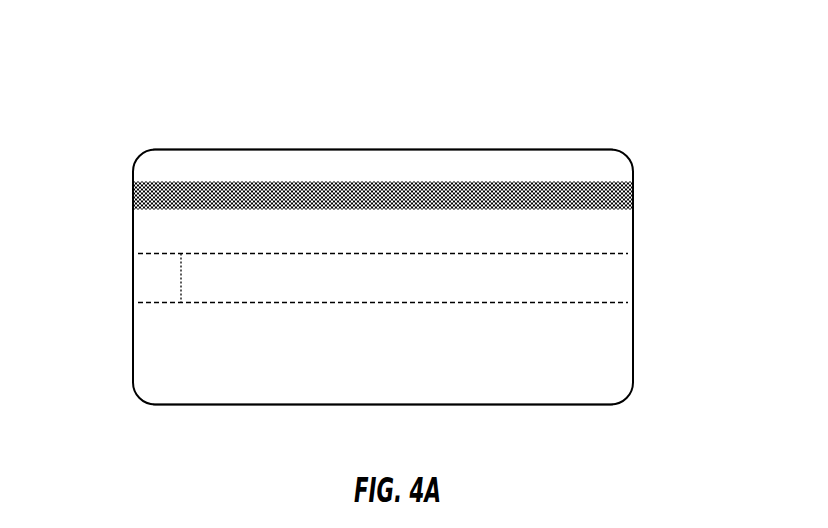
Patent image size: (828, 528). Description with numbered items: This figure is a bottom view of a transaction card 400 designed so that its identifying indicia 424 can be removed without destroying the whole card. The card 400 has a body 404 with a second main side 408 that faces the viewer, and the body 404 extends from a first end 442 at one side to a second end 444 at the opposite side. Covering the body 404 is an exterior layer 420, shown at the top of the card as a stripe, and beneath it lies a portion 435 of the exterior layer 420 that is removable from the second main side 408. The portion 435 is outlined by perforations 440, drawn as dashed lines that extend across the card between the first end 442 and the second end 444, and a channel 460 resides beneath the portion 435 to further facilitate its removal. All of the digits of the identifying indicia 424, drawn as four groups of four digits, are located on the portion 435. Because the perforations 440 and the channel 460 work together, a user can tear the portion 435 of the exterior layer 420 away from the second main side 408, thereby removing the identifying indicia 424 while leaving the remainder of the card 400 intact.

The card 400 is at (238, 88).
The body 404 is at (473, 134).
The second main side 408 is at (545, 390).
The exterior layer 420 is at (237, 378).
The identifying indicia 424 is at (597, 275).
The portion 435 is at (148, 272).
The perforations 440 is at (157, 252).
The first end 442 is at (131, 332).
The second end 444 is at (633, 352).
The channel 460 is at (124, 286).